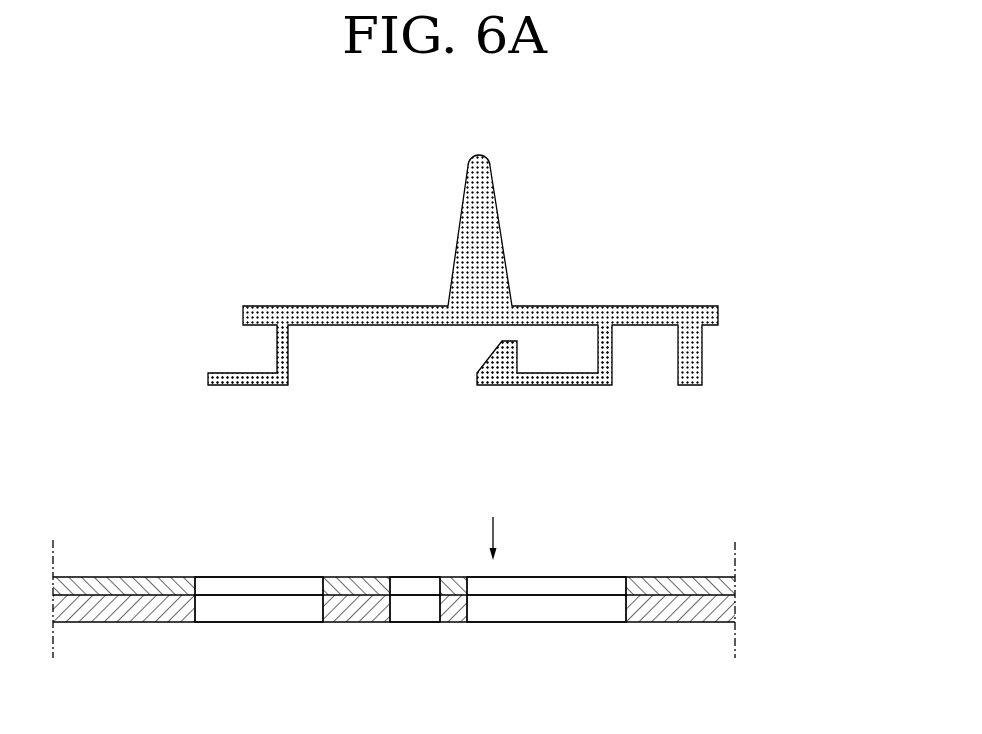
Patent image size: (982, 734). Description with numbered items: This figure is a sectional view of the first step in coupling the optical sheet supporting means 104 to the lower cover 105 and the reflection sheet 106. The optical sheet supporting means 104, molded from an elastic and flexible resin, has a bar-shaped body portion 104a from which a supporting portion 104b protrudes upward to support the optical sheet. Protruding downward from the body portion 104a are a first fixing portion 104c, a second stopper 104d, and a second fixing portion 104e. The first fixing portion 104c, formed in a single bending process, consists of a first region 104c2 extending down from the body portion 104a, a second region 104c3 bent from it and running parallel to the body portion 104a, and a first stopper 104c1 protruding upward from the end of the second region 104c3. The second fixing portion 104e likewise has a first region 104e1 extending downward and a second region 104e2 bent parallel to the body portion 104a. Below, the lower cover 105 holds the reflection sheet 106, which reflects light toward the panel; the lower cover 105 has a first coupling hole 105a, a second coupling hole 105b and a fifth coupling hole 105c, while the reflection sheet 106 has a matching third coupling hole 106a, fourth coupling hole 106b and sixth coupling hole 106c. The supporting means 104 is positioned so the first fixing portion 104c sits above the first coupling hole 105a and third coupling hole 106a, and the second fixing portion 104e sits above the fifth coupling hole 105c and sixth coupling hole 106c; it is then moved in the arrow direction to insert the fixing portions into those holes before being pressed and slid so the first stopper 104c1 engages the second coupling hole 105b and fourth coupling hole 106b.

The optical sheet supporting means 104 is at (701, 284).
The body portion 104a is at (327, 317).
The supporting portion 104b is at (493, 238).
The first fixing portion 104c is at (652, 457).
The first stopper 104c1 is at (503, 383).
The first region 104c2 is at (608, 356).
The second region 104c3 is at (565, 383).
The second stopper 104d is at (692, 385).
The second fixing portion 104e is at (323, 458).
The first region 104e1 is at (288, 357).
The second region 104e2 is at (233, 385).
The lower cover 105 is at (727, 617).
The first coupling hole 105a is at (523, 613).
The second coupling hole 105b is at (402, 613).
The fifth coupling hole 105c is at (216, 610).
The reflection sheet 106 is at (725, 588).
The third coupling hole 106a is at (585, 588).
The fourth coupling hole 106b is at (425, 592).
The sixth coupling hole 106c is at (267, 587).